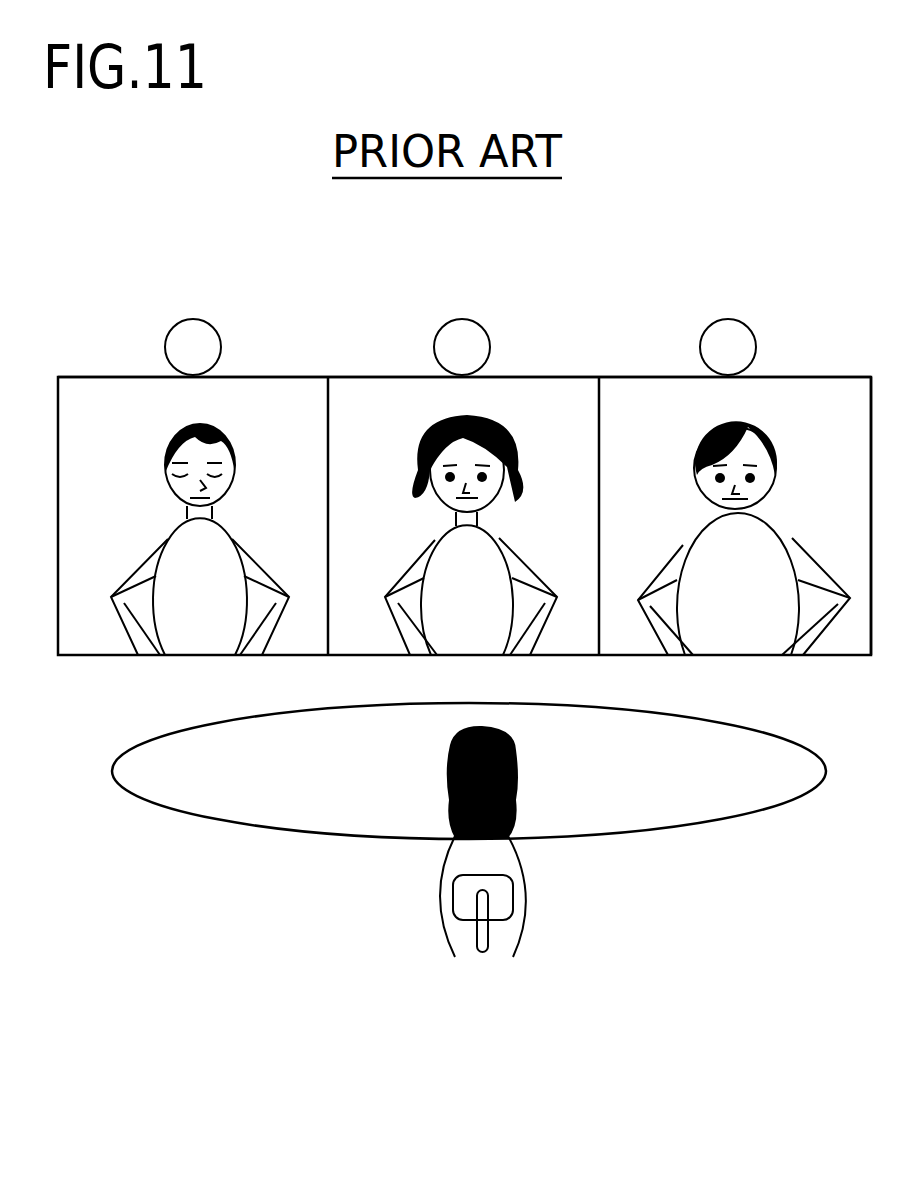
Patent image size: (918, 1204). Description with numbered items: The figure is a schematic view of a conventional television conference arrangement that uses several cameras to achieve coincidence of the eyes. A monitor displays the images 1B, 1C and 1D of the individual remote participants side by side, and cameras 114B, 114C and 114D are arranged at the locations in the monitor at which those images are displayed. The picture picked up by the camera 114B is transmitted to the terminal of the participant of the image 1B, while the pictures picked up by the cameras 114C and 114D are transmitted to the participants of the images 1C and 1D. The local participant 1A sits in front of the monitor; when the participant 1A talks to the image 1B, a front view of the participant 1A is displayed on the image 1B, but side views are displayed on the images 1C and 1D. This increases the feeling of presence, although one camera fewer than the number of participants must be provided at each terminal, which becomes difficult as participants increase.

The participant 1A is at (483, 875).
The image of participant 1B is at (193, 487).
The image of participant 1C is at (463, 487).
The image of participant 1D is at (735, 487).
The camera 114B is at (212, 320).
The camera 114C is at (477, 320).
The camera 114D is at (742, 320).